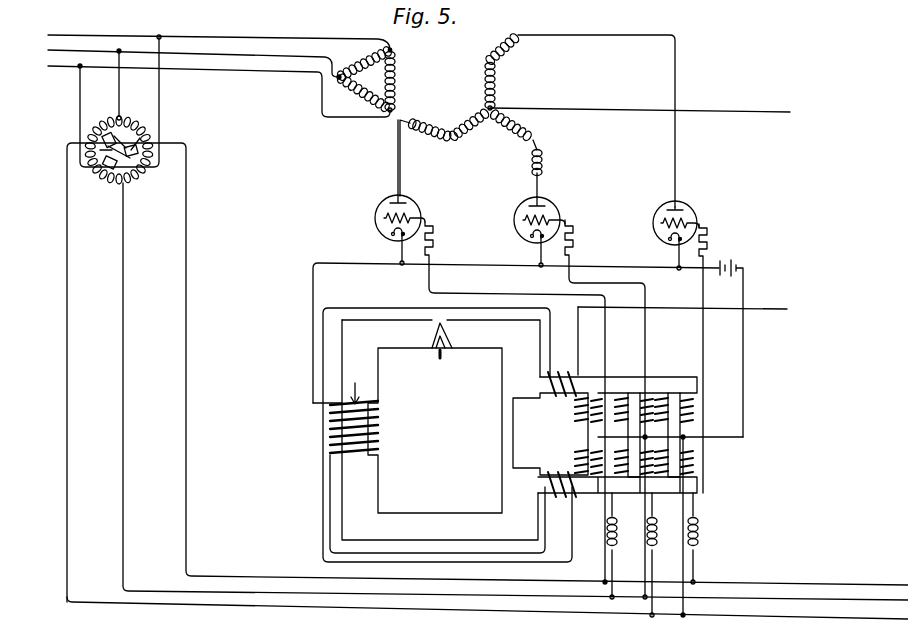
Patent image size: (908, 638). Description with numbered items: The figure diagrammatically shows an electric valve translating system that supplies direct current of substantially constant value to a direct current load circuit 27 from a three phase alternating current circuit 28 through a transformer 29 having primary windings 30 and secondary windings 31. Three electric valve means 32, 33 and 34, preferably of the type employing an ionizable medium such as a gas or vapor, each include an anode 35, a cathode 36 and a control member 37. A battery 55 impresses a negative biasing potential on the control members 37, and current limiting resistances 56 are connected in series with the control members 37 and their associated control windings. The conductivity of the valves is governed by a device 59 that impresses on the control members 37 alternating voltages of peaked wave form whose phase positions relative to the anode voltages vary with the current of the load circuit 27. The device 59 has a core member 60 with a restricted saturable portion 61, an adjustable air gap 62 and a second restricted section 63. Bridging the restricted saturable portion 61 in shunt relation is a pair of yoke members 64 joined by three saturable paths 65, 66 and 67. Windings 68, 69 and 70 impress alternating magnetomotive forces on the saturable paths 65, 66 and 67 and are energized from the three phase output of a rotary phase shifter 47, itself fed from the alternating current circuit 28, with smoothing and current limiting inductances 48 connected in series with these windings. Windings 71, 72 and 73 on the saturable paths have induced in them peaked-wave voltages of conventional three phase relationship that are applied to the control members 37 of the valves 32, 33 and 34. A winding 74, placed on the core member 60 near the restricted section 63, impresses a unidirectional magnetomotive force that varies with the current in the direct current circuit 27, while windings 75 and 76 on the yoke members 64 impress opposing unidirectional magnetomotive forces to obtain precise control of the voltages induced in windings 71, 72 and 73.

The three phase alternating current circuit 28 is at (76, 70).
The rotary phase shifter 47 is at (104, 181).
The primary windings 30 is at (384, 77).
The transformer 29 is at (444, 81).
The secondary windings 31 is at (484, 96).
The direct current circuit 27 is at (790, 121).
The electric valve means 32 is at (392, 192).
The electric valve means 33 is at (553, 208).
The electric valve means 34 is at (688, 207).
The anode 35 is at (394, 201).
The cathode 36 is at (390, 233).
The control member 37 is at (383, 217).
The current limiting resistances 56 is at (434, 236).
The battery 55 is at (731, 257).
The device 59 is at (443, 433).
The core member 60 is at (376, 377).
The restricted saturable portion 61 is at (503, 456).
The adjustable air gap 62 is at (448, 350).
The second restricted section 63 is at (357, 456).
The yoke members 64 is at (666, 385).
The saturable path 65 is at (583, 435).
The saturable path 66 is at (625, 432).
The saturable path 67 is at (667, 432).
The winding 68 is at (580, 448).
The winding 69 is at (631, 478).
The winding 70 is at (682, 462).
The winding 71 is at (580, 404).
The winding 72 is at (634, 394).
The winding 73 is at (681, 415).
The winding 74 is at (329, 428).
The winding 75 is at (566, 370).
The winding 76 is at (566, 502).
The smoothing and current limiting inductances 48 is at (617, 536).